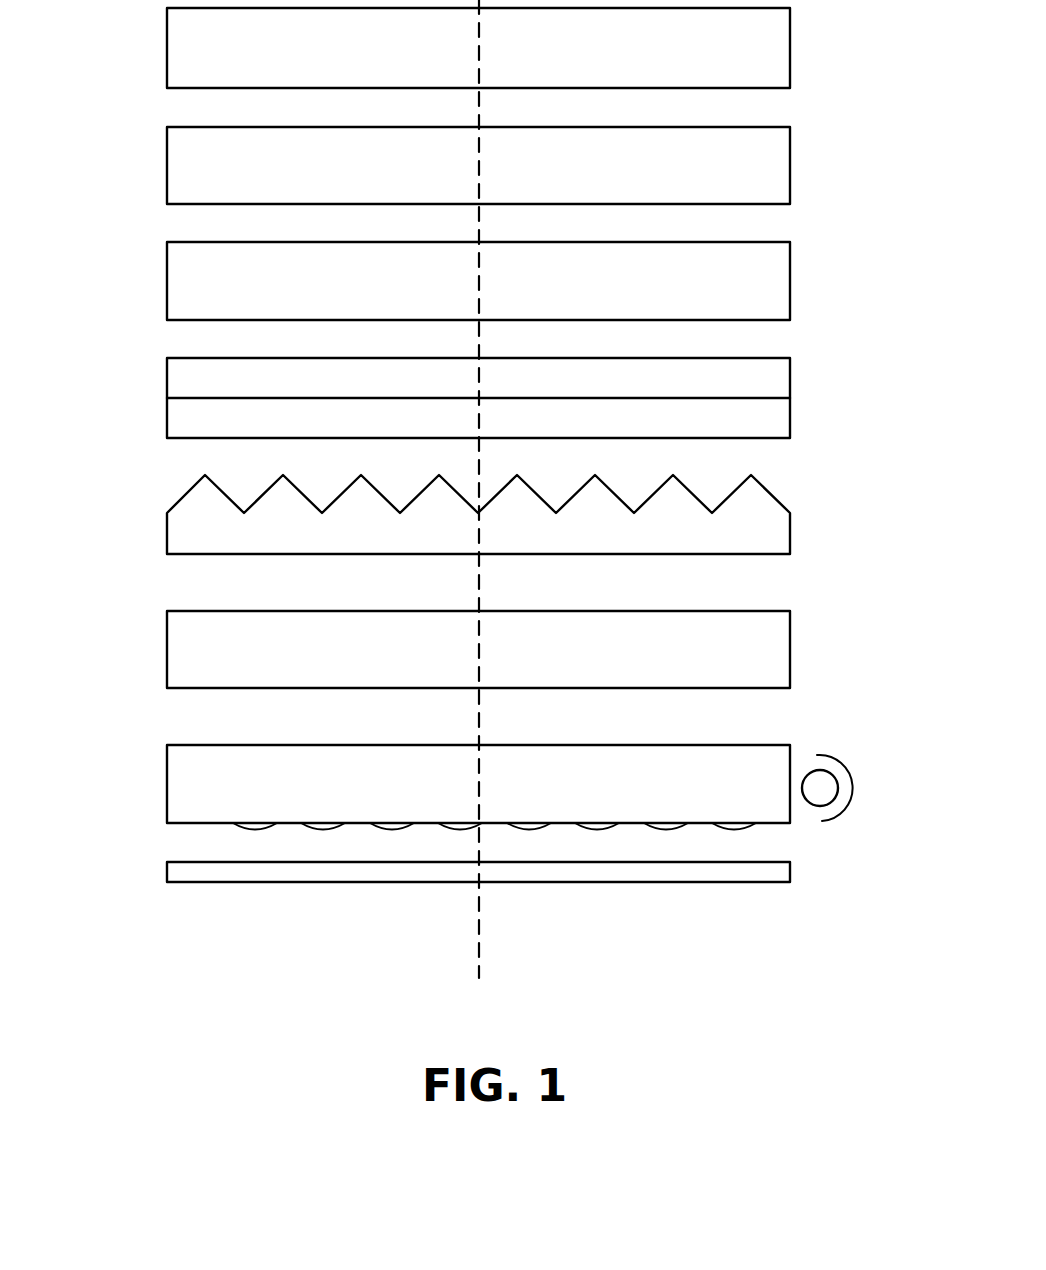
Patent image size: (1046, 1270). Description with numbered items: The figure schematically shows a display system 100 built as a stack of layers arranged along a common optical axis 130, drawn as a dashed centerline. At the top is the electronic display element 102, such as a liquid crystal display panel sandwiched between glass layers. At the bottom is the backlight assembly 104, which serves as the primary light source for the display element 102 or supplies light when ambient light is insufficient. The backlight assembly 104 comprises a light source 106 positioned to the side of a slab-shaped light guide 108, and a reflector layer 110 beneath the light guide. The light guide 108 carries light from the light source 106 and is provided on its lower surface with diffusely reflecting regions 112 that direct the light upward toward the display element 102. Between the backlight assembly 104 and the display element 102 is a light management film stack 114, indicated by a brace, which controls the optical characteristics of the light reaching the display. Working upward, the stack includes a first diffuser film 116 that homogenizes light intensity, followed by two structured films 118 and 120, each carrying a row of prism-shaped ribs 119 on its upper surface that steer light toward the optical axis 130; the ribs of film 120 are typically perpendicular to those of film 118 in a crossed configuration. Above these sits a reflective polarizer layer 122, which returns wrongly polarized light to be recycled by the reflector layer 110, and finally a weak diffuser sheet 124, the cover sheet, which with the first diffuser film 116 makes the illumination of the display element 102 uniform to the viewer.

The display system 100 is at (264, 929).
The display element 102 is at (790, 56).
The backlight assembly 104 is at (155, 738).
The light source 106 is at (822, 778).
The light guide 108 is at (200, 745).
The reflector layer 110 is at (790, 870).
The diffusely reflecting regions 112 is at (733, 830).
The light management film stack 114 is at (155, 117).
The first diffuser film 116 is at (790, 648).
The structured film 118 is at (790, 539).
The prism-shaped ribs 119 is at (790, 379).
The structured film 120 is at (790, 424).
The reflective polarizer layer 122 is at (790, 295).
The diffuser sheet 124 is at (790, 173).
The optical axis 130 is at (481, 928).